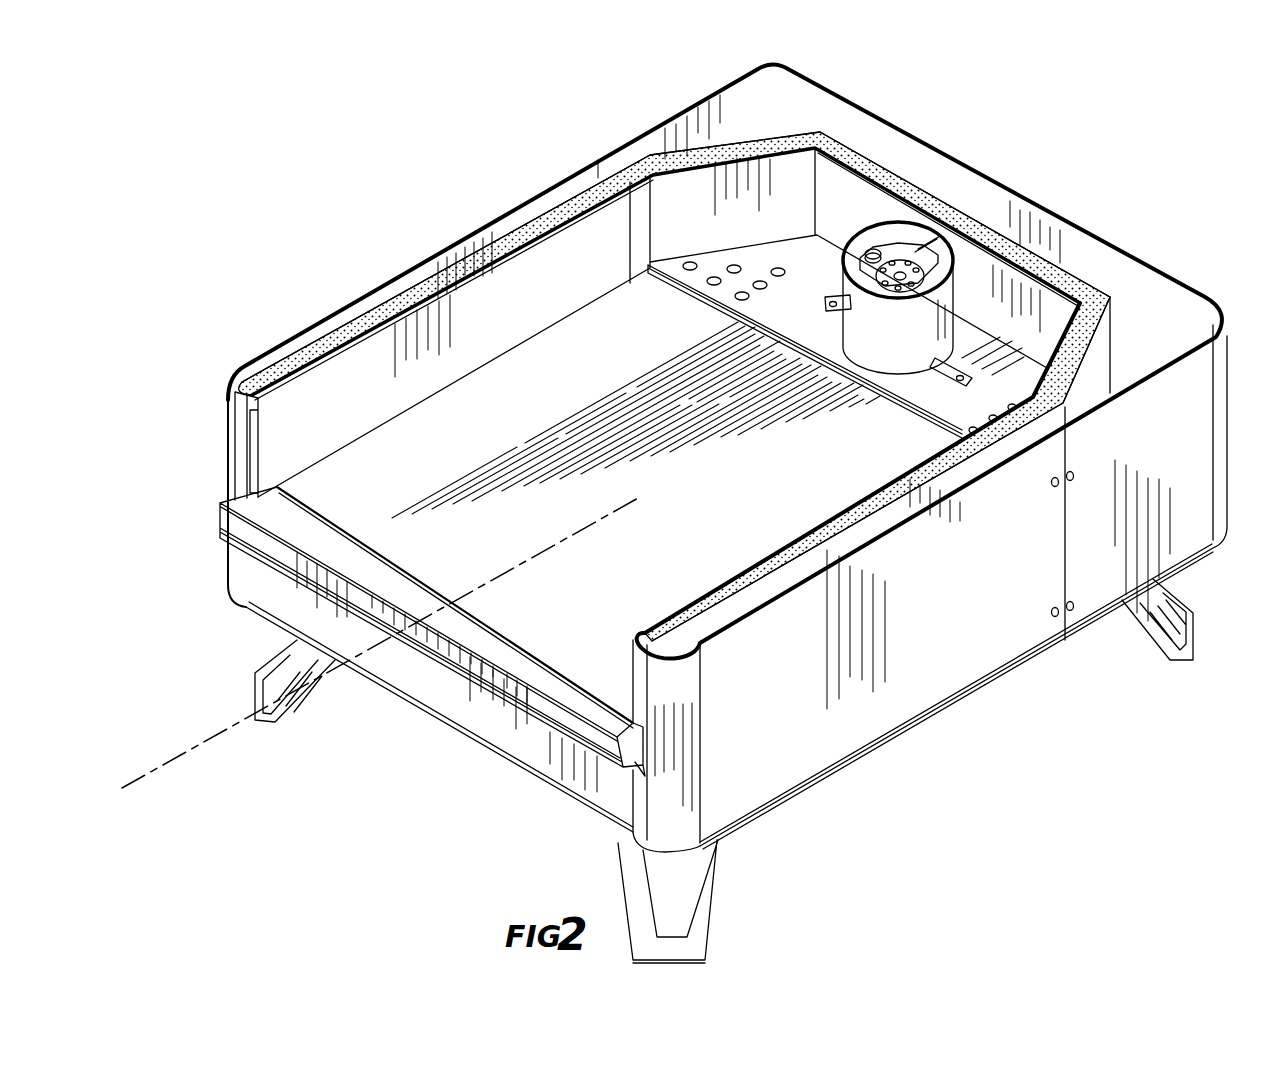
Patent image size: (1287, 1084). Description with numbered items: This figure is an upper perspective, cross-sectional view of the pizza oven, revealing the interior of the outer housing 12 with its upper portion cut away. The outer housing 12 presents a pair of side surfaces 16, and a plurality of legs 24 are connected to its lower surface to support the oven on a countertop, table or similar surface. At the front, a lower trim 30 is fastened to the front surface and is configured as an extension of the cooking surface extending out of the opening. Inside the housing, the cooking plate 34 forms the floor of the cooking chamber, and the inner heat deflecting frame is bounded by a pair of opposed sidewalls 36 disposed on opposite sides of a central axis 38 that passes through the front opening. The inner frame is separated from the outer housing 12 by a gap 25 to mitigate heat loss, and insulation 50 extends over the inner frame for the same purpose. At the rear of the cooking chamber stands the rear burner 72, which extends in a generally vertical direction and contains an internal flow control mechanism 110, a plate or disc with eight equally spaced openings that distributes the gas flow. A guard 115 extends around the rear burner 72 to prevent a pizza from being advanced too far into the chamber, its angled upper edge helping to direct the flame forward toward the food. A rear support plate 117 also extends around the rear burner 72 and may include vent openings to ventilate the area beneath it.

The outer housing 12 is at (1218, 432).
The side surfaces 16 is at (913, 687).
The legs 24 is at (257, 673).
The gap 25 is at (1163, 318).
The lower trim 30 is at (541, 705).
The cooking plate 34 is at (663, 530).
The sidewalls 36 is at (525, 310).
The central axis 38 is at (212, 748).
The insulation 50 is at (794, 196).
The rear burner 72 is at (893, 224).
The internal flow control mechanism 110 is at (922, 248).
The guard 115 is at (876, 347).
The rear support plate 117 is at (803, 257).